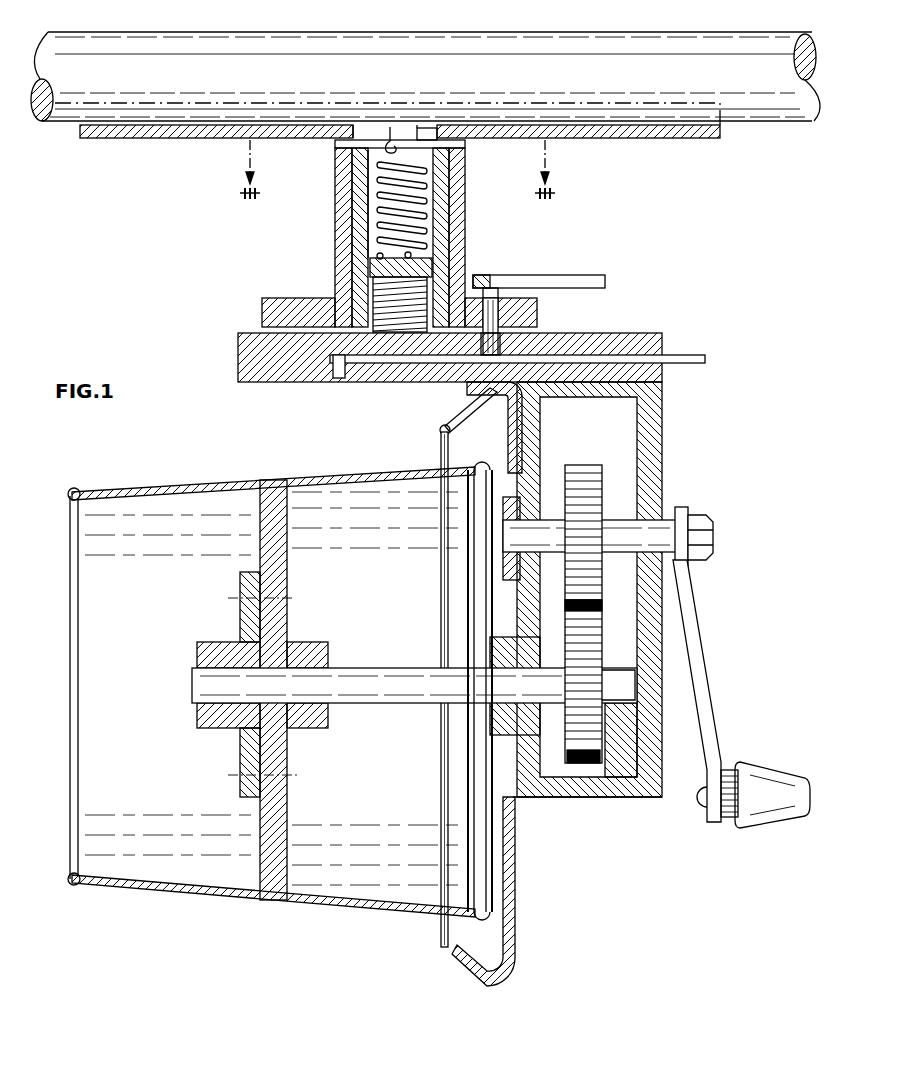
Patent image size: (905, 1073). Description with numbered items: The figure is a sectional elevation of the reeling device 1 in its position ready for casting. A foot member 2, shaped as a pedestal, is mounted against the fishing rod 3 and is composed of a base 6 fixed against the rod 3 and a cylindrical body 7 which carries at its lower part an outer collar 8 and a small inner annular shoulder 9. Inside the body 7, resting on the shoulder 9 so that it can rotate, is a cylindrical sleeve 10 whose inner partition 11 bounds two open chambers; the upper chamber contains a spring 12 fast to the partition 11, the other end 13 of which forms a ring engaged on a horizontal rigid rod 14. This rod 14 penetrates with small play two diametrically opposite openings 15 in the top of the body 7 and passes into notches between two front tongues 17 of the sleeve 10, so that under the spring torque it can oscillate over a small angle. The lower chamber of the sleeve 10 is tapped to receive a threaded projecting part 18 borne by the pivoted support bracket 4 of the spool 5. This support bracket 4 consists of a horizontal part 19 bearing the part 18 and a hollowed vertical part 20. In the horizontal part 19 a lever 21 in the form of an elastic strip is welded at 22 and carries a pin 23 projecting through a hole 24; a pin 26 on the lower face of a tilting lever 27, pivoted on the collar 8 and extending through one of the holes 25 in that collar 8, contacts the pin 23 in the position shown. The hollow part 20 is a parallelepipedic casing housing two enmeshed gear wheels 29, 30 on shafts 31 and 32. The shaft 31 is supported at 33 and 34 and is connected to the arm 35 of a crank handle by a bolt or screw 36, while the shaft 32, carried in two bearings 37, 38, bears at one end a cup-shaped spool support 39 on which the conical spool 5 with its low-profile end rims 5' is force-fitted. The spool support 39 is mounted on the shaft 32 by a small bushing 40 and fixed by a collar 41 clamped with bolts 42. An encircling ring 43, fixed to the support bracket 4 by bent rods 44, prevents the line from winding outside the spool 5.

The reeling device 1 is at (705, 415).
The foot member 2 is at (467, 227).
The fishing rod 3 is at (611, 46).
The support bracket 4 is at (667, 478).
The spool 5 is at (281, 695).
The end rims 5' is at (279, 710).
The base 6 is at (124, 140).
The cylindrical body 7 is at (340, 220).
The outer collar 8 is at (296, 302).
The inner annular shoulder 9 is at (357, 317).
The cylindrical sleeve 10 is at (358, 194).
The inner partition 11 is at (372, 257).
The spring 12 is at (424, 197).
The ring-shaped end 13 is at (392, 138).
The horizontal rigid rod 14 is at (352, 138).
The openings 15 is at (340, 148).
The front tongues 17 is at (437, 136).
The threaded projecting part 18 is at (425, 292).
The horizontal part 19 is at (613, 345).
The hollowed vertical part 20 is at (663, 755).
The lever 21 is at (679, 353).
The weld 22 is at (335, 378).
The pin 23 is at (497, 345).
The hole 24 is at (485, 345).
The holes 25 is at (503, 302).
The pin 26 is at (490, 282).
The tilting lever 27 is at (581, 282).
The gear wheel 29 is at (592, 468).
The gear wheel 30 is at (596, 637).
The shaft 31 is at (630, 538).
The shaft 32 is at (405, 694).
The bearing location 33 is at (535, 518).
The bearing location 34 is at (647, 518).
The crank handle arm 35 is at (703, 670).
The bolt 36 is at (703, 520).
The bearing 37 is at (505, 731).
The bearing 38 is at (623, 720).
The spool support 39 is at (280, 557).
The bushing 40 is at (313, 653).
The collar 41 is at (197, 648).
The bolts 42 is at (247, 590).
The encircling ring 43 is at (440, 945).
The bent rods 44 is at (550, 428).